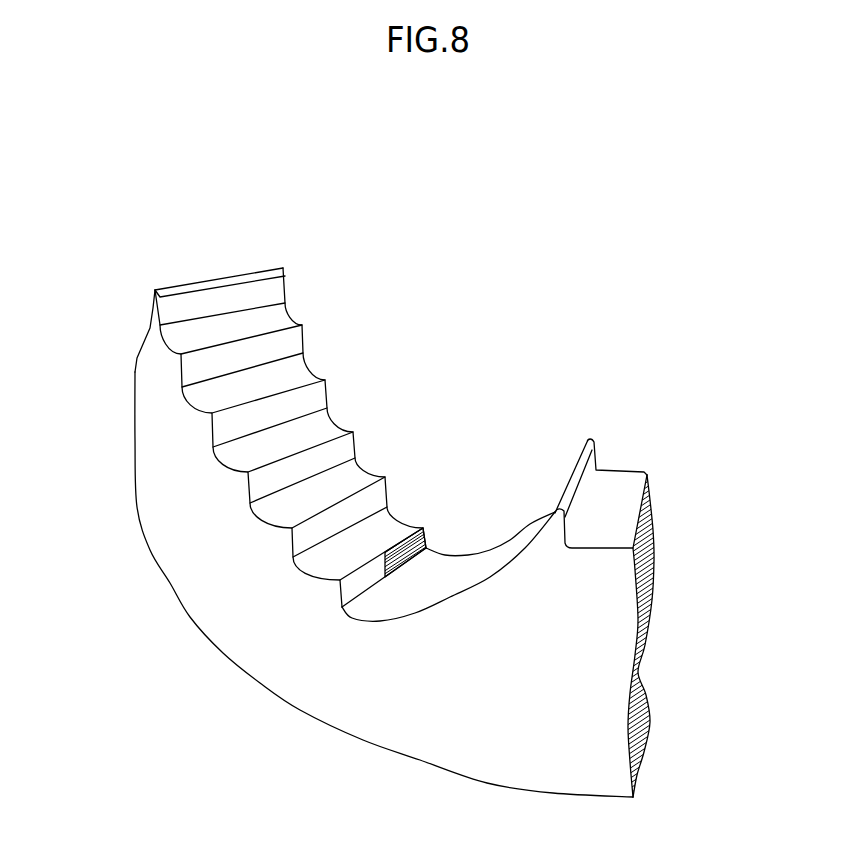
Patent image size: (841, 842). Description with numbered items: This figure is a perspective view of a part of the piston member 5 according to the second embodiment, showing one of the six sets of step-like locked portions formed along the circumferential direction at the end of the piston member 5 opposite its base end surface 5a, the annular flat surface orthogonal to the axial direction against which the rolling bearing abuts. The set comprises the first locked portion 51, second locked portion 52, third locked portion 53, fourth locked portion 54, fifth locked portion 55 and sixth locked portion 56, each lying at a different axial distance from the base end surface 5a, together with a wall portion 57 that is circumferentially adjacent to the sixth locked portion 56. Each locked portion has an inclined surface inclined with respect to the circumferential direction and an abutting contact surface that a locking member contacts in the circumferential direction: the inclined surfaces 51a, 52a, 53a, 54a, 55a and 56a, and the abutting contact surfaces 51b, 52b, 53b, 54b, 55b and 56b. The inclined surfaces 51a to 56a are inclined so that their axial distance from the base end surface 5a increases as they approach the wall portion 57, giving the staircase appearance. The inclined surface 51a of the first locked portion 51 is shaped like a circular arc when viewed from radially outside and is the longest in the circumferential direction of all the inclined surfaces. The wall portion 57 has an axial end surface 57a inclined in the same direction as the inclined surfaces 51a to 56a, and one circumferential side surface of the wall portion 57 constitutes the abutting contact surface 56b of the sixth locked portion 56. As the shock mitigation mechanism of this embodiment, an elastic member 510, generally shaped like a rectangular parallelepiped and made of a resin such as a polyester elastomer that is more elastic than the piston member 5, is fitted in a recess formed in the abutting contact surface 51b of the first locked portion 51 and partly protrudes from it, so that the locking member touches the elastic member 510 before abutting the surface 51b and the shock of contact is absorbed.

The piston member 5 is at (537, 259).
The base end surface 5a is at (477, 727).
The first locked portion 51 is at (481, 463).
The inclined surface 51a is at (483, 570).
The abutting contact surface 51b is at (360, 583).
The second locked portion 52 is at (454, 427).
The inclined surface 52a is at (400, 518).
The abutting contact surface 52b is at (307, 537).
The third locked portion 53 is at (422, 385).
The inclined surface 53a is at (367, 477).
The abutting contact surface 53b is at (263, 482).
The fourth locked portion 54 is at (397, 337).
The inclined surface 54a is at (337, 425).
The abutting contact surface 54b is at (232, 427).
The fifth locked portion 55 is at (371, 282).
The inclined surface 55a is at (313, 372).
The abutting contact surface 55b is at (198, 368).
The sixth locked portion 56 is at (322, 243).
The inclined surface 56a is at (293, 323).
The abutting contact surface 56b is at (175, 313).
The wall portion 57 is at (558, 532).
The axial end surface 57a is at (168, 287).
The elastic member 510 is at (444, 536).